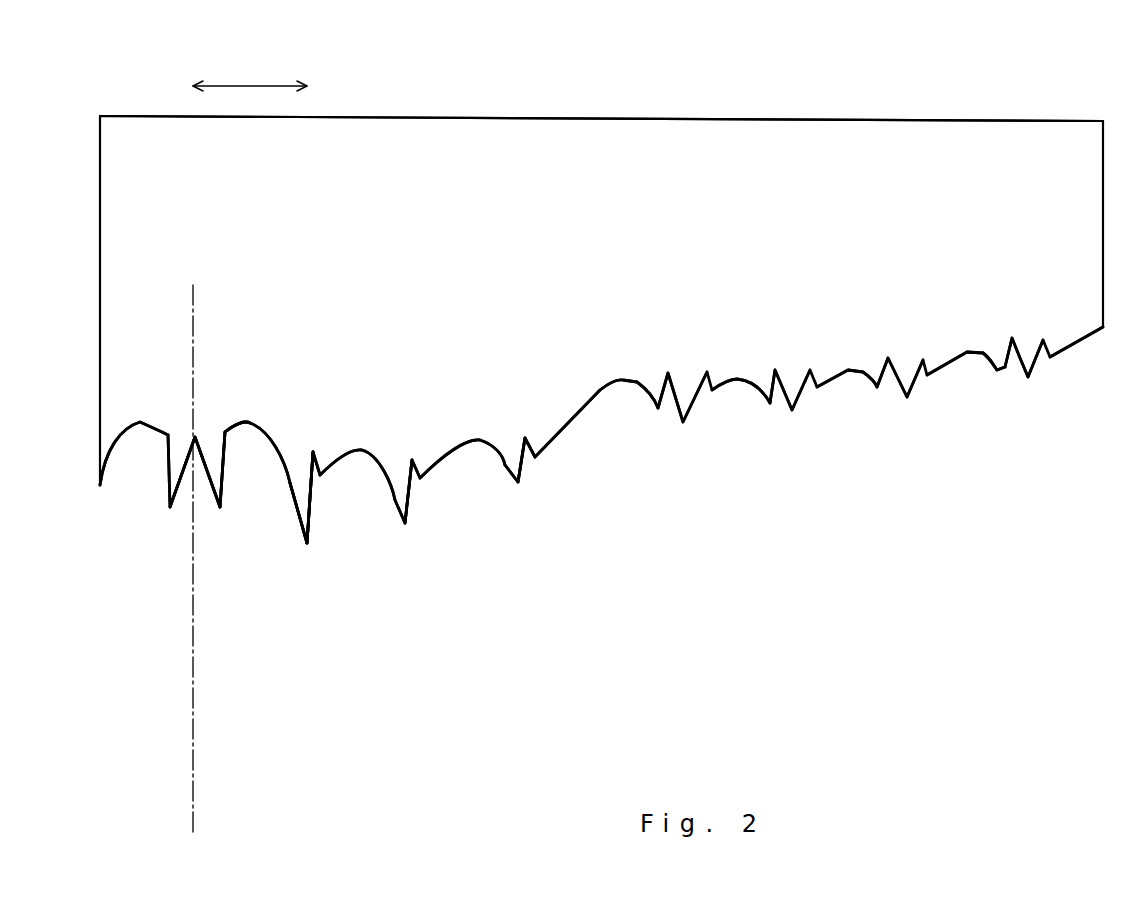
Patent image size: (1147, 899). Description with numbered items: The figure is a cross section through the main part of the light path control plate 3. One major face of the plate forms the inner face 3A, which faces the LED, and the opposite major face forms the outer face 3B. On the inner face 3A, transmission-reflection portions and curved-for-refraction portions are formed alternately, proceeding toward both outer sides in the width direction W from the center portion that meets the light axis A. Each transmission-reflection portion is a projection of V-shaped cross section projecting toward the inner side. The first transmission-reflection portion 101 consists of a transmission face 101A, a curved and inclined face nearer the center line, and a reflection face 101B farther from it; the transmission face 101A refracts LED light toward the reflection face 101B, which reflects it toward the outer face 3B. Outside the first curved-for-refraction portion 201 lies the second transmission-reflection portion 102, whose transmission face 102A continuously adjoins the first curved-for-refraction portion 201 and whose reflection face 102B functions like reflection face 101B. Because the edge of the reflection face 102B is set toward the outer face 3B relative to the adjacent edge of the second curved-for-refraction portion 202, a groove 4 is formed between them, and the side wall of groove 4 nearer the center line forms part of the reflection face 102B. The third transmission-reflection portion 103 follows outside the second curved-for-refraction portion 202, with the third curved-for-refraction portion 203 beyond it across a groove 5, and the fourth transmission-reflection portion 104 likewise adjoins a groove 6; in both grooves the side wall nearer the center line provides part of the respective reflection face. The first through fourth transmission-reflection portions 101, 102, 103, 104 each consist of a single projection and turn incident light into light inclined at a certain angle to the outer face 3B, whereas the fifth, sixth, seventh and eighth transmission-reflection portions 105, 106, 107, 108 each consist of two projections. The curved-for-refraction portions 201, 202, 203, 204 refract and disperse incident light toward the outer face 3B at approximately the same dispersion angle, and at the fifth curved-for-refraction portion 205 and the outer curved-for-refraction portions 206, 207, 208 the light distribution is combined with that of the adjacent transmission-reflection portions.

The light path control plate 3 is at (1108, 175).
The inner face 3A is at (993, 363).
The outer face 3B is at (745, 121).
The width direction W is at (233, 86).
The light axis A is at (193, 706).
The groove 4 is at (321, 470).
The groove 5 is at (419, 478).
The groove 6 is at (535, 455).
The first transmission-reflection portion 101 is at (170, 515).
The transmission face 101A is at (197, 455).
The reflection face 101B is at (250, 465).
The second transmission-reflection portion 102 is at (309, 553).
The transmission face 102A is at (300, 492).
The reflection face 102B is at (306, 507).
The third transmission-reflection portion 103 is at (406, 530).
The fourth transmission-reflection portion 104 is at (519, 492).
The fifth transmission-reflection portion 105 is at (683, 432).
The sixth transmission-reflection portion 106 is at (792, 422).
The seventh transmission-reflection portion 107 is at (907, 408).
The eighth transmission-reflection portion 108 is at (1044, 383).
The first curved-for-refraction portion 201 is at (140, 425).
The second curved-for-refraction portion 202 is at (357, 452).
The third curved-for-refraction portion 203 is at (470, 444).
The fourth curved-for-refraction portion 204 is at (598, 398).
The fifth curved-for-refraction portion 205 is at (722, 390).
The sixth curved-for-refraction portion 206 is at (843, 377).
The seventh curved-for-refraction portion 207 is at (961, 358).
The eighth curved-for-refraction portion 208 is at (1093, 336).